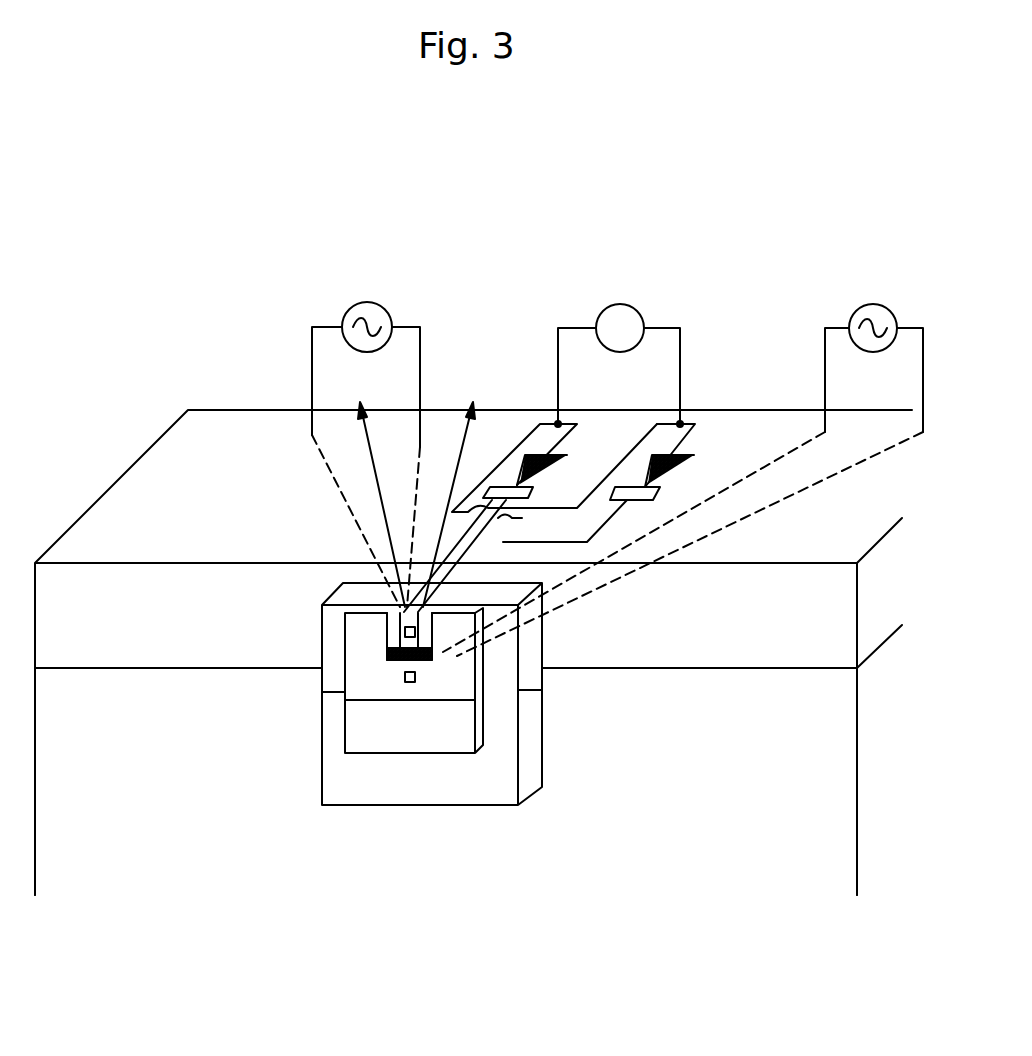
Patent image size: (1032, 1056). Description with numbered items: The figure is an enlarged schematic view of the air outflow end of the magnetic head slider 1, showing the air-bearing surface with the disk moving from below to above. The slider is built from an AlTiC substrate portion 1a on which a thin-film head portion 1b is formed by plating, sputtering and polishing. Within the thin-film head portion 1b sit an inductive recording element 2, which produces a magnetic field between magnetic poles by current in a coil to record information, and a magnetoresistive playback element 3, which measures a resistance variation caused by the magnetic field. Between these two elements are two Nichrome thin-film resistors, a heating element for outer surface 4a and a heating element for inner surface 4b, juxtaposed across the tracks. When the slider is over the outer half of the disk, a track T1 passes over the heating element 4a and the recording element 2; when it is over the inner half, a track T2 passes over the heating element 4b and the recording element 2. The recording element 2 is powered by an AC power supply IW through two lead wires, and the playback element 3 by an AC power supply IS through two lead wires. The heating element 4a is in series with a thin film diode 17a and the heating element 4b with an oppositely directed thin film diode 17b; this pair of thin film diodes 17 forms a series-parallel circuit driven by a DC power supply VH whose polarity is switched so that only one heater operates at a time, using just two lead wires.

The magnetic head slider 1 is at (121, 468).
The substrate portion 1a is at (122, 731).
The thin-film head portion 1b is at (122, 644).
The recording element 2 is at (437, 631).
The playback element 3 is at (407, 684).
The heating element for outer surface 4a is at (433, 657).
The heating element for inner surface 4b is at (387, 652).
The pair of thin film diodes 17 is at (818, 368).
The thin film diode 17a is at (670, 462).
The thin film diode 17b is at (567, 455).
The track T1 is at (412, 662).
The track T2 is at (405, 662).
The AC power supply IW is at (393, 441).
The DC power supply VH is at (619, 351).
The AC power supply IS is at (683, 465).